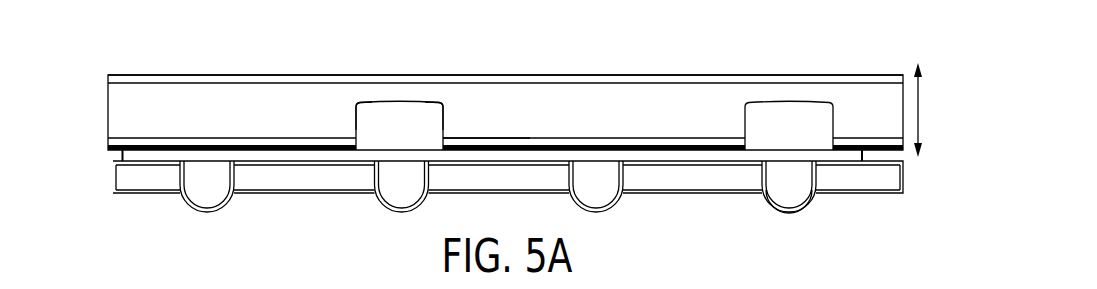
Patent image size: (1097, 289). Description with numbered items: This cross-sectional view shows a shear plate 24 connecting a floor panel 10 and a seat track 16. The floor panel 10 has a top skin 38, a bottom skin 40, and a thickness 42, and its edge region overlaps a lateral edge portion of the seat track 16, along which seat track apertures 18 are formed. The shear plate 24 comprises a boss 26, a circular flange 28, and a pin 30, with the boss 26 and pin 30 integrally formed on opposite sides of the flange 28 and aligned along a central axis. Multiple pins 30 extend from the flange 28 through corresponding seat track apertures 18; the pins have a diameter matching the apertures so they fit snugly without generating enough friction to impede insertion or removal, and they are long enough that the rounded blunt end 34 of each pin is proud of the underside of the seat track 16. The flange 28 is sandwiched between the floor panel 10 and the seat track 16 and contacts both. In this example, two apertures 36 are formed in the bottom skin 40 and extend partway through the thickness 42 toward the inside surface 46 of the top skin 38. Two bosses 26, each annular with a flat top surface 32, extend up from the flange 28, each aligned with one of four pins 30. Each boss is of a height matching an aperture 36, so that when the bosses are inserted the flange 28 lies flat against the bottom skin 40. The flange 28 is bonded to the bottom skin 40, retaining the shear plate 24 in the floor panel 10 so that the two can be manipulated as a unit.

The floor panel 10 is at (118, 117).
The seat track 16 is at (122, 182).
The seat track apertures 18 is at (180, 195).
The shear plate 24 is at (465, 120).
The boss 26 is at (397, 110).
The circular flange 28 is at (698, 157).
The pin 30 is at (797, 190).
The flat top surface 32 is at (432, 100).
The rounded blunt end 34 is at (781, 213).
The apertures 36 is at (355, 100).
The top skin 38 is at (107, 78).
The bottom skin 40 is at (108, 143).
The thickness 42 is at (920, 113).
The inside surface 46 is at (613, 100).